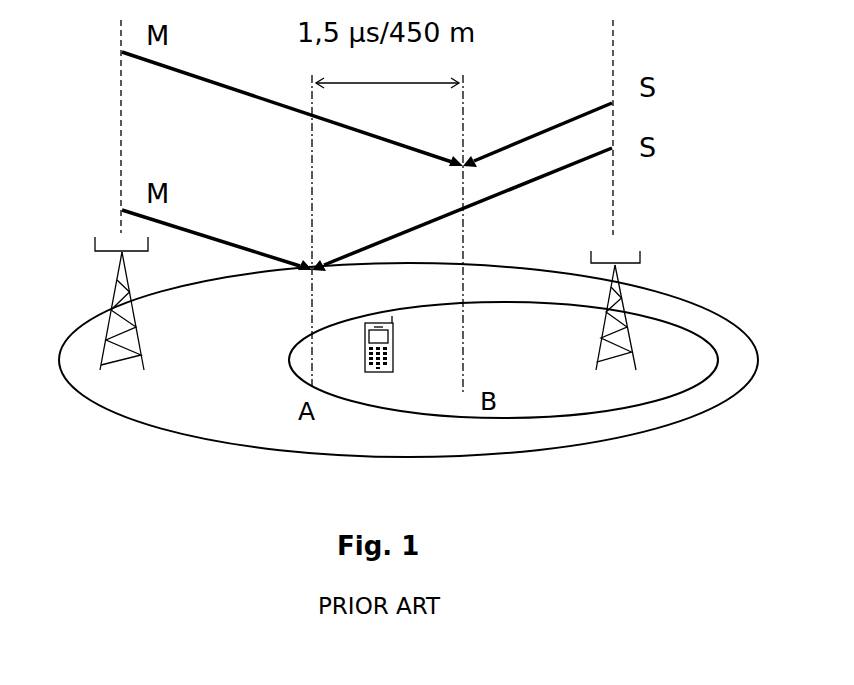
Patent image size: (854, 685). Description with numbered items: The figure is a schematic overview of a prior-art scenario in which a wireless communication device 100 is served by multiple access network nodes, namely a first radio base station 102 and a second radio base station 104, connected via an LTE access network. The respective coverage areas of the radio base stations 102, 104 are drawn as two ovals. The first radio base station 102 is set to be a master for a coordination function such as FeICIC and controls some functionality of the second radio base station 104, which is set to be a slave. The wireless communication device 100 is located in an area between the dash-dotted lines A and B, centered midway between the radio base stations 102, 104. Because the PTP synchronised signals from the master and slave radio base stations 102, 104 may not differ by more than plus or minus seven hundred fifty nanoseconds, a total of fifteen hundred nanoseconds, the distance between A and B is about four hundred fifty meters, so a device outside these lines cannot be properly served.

The wireless communication device 100 is at (388, 372).
The first radio base station 102 is at (135, 338).
The second radio base station 104 is at (596, 357).